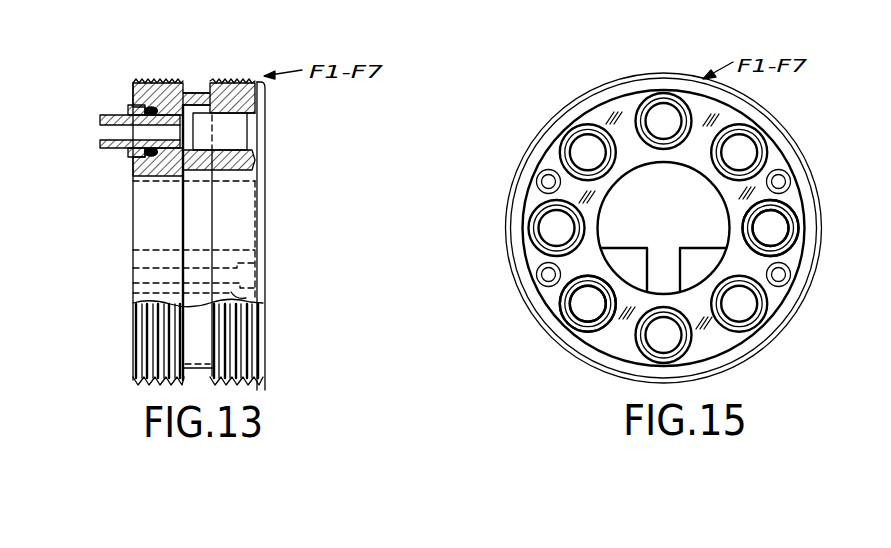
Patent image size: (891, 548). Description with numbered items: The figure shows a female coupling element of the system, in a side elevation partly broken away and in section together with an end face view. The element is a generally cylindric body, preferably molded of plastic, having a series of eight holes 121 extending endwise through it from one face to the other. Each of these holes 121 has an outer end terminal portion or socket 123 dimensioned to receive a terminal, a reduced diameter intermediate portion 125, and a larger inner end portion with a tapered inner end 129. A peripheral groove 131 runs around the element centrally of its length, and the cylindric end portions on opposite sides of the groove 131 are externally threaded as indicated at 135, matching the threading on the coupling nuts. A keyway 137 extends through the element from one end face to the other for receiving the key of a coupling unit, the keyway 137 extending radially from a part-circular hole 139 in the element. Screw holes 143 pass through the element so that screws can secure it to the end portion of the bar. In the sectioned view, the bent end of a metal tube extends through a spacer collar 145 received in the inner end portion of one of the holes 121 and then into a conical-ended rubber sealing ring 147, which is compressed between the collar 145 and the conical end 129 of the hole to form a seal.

In FIG. 15, the holes 121 is at (782, 235).
In FIG. 13, the socket 123 is at (229, 150).
In FIG. 15, the socket 123 is at (562, 313).
In FIG. 13, the reduced diameter intermediate portion 125 is at (165, 172).
In FIG. 15, the reduced diameter intermediate portion 125 is at (584, 319).
In FIG. 13, the tapered inner end 129 is at (167, 81).
In FIG. 13, the peripheral groove 131 is at (191, 96).
In FIG. 13, the external threading 135 is at (165, 63).
In FIG. 13, the keyway 137 is at (264, 300).
In FIG. 15, the keyway 137 is at (661, 258).
In FIG. 15, the part-circular hole 139 is at (681, 216).
In FIG. 13, the screw holes 143 is at (150, 270).
In FIG. 15, the screw holes 143 is at (536, 176).
In FIG. 13, the spacer collars 145 is at (136, 114).
In FIG. 13, the rubber sealing rings 147 is at (149, 106).